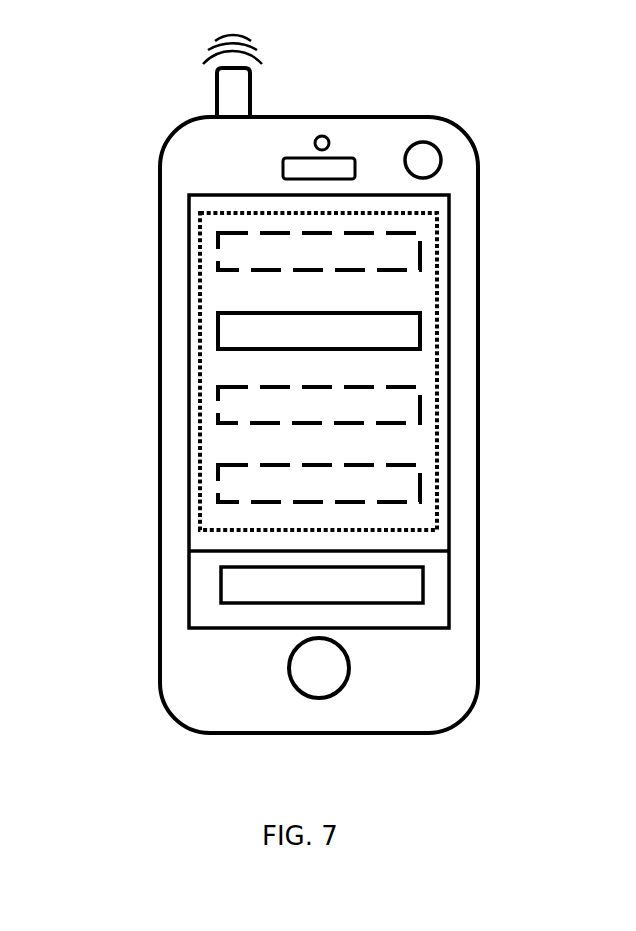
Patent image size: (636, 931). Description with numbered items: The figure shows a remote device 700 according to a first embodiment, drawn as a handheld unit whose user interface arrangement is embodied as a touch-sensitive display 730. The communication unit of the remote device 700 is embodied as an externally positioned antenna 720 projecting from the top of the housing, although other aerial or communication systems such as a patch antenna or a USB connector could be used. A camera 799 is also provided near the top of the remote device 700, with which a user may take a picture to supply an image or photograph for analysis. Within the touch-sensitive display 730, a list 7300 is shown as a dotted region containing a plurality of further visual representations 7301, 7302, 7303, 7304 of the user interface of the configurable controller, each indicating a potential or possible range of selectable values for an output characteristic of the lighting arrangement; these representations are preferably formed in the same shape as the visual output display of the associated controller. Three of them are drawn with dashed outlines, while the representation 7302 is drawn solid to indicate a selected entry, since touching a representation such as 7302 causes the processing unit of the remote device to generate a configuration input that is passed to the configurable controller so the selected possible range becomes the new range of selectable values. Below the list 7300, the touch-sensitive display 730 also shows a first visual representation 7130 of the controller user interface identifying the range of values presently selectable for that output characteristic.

The remote device 700 is at (479, 357).
The antenna 720 is at (217, 90).
The camera 799 is at (440, 155).
The touch-sensitive display 730 is at (447, 295).
The list 7300 is at (437, 505).
The further visual representation 7301 is at (218, 253).
The further visual representation 7302 is at (218, 330).
The further visual representation 7303 is at (218, 407).
The further visual representation 7304 is at (218, 483).
The first visual representation 7130 is at (221, 585).